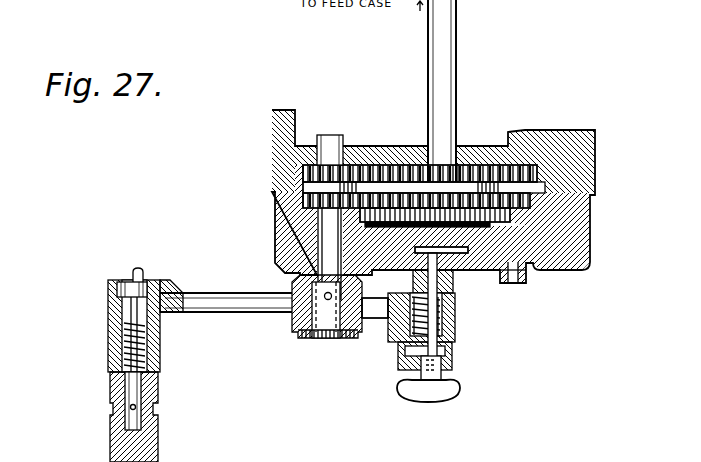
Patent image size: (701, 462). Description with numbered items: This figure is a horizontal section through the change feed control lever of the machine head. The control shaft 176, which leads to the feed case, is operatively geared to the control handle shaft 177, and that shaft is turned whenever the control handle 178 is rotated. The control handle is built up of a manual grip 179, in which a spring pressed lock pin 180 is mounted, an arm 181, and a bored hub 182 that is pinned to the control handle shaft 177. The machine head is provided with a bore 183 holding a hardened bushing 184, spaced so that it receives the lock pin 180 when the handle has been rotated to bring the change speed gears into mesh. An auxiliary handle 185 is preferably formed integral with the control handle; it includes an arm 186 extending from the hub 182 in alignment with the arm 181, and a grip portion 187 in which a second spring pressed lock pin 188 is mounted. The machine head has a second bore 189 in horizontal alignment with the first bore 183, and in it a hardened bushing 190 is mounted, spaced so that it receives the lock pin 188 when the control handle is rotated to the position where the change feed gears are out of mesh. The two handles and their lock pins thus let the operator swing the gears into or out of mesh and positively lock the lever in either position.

The control shaft 176 is at (458, 72).
The control handle shaft 177 is at (343, 135).
The control handle 178 is at (162, 348).
The manual grip 179 is at (150, 440).
The spring pressed lock pin 180 is at (143, 270).
The arm 181 is at (260, 314).
The bored hub 182 is at (308, 338).
The bore 183 is at (563, 272).
The hardened bushing 184 is at (450, 275).
The auxiliary handle 185 is at (410, 360).
The arm 186 is at (390, 320).
The grip portion 187 is at (460, 395).
The spring pressed lock pin 188 is at (448, 302).
The second bore 189 is at (518, 283).
The hardened bushing 190 is at (463, 272).